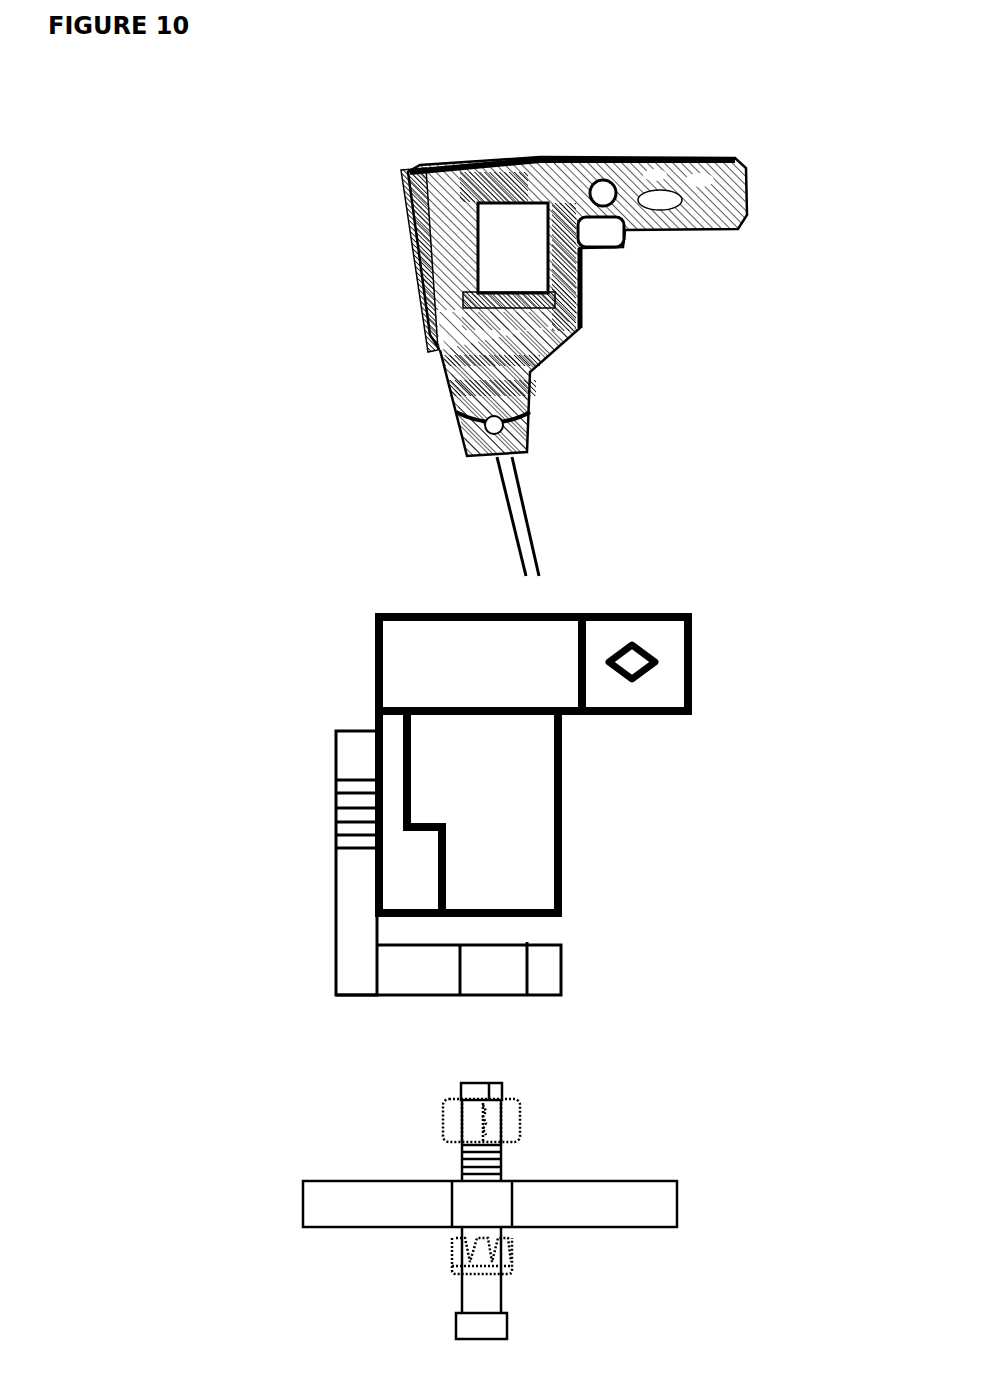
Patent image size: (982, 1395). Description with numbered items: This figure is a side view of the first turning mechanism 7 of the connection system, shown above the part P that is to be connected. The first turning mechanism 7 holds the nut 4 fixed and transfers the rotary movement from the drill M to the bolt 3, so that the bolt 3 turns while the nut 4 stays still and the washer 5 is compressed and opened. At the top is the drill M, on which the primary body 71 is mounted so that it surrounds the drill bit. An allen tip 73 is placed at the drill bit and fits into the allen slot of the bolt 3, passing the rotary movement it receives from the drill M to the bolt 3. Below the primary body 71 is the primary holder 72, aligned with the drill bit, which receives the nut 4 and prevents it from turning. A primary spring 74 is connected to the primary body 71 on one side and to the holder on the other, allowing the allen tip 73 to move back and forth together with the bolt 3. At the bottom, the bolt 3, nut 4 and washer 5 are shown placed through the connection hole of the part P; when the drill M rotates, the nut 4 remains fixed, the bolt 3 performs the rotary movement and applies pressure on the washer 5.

The first turning mechanism 7 is at (196, 341).
The drill M is at (450, 333).
The allen tip 73 is at (520, 522).
The primary body 71 is at (417, 658).
The primary spring 74 is at (326, 797).
The primary holder 72 is at (510, 983).
The part P is at (337, 1210).
The nut 4 is at (508, 1127).
The washer 5 is at (472, 1262).
The bolt 3 is at (487, 1302).